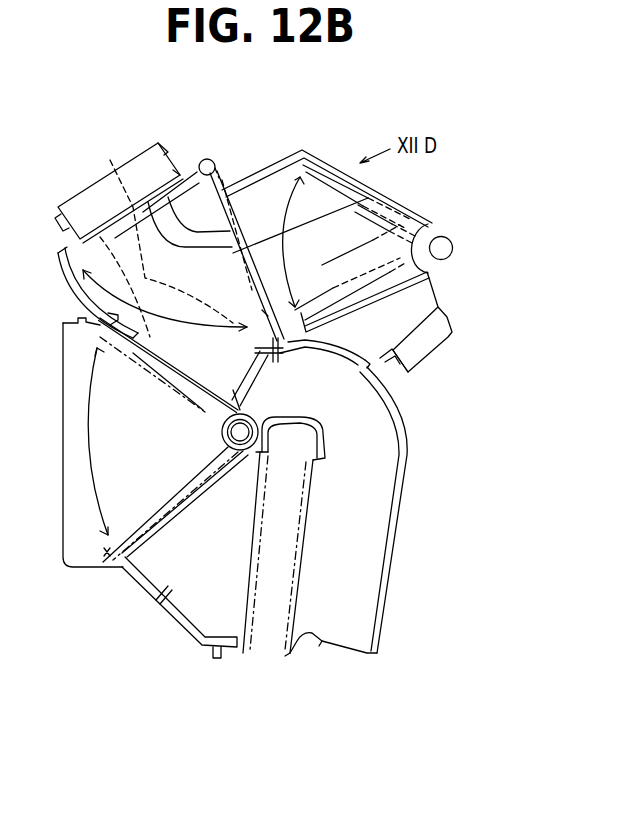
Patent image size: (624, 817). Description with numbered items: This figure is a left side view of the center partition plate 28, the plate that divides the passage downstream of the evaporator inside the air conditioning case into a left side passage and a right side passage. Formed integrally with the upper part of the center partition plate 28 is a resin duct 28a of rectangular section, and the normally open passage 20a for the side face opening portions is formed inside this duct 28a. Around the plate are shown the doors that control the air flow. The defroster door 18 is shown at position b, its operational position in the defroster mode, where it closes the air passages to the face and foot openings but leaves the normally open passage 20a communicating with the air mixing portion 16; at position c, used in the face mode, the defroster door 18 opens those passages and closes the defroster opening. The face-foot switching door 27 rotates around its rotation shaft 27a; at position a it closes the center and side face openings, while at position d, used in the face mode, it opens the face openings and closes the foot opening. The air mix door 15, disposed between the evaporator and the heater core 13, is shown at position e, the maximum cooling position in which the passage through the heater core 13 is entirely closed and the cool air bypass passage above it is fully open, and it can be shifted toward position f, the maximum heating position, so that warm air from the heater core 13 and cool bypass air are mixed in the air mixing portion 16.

The heater core 13 is at (267, 603).
The air mix door 15 is at (100, 563).
The air mixing portion 16 is at (78, 207).
The defroster door 18 is at (216, 158).
The normally open passage 20a is at (323, 158).
The face-foot switching door 27 is at (412, 207).
The rotation shaft 27a is at (450, 236).
The center partition plate 28 is at (428, 467).
The duct 28a is at (248, 185).
The position a is at (294, 152).
The position b is at (164, 233).
The position c is at (67, 240).
The position d is at (440, 287).
The position e is at (104, 549).
The position f is at (100, 338).